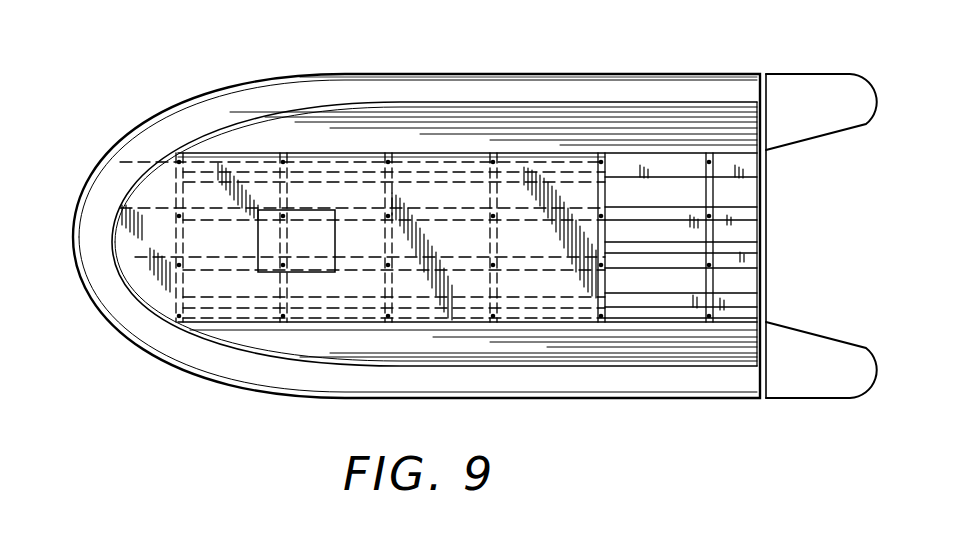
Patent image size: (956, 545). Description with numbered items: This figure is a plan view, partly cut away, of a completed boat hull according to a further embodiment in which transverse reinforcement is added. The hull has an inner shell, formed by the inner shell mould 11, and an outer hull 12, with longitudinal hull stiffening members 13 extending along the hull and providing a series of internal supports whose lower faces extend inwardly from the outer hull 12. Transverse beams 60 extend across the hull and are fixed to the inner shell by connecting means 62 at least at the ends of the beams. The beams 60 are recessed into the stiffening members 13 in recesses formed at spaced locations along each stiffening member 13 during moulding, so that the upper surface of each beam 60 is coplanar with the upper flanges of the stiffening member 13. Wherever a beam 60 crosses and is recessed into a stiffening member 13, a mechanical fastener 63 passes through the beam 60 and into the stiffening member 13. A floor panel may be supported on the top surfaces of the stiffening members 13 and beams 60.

The inner shell mould 11 is at (607, 128).
The outer shell mould 12 is at (557, 74).
The hull stiffening member 13 is at (678, 213).
The beam 60 is at (700, 197).
The connecting means 62 is at (493, 318).
The mechanical fastener 63 is at (388, 213).